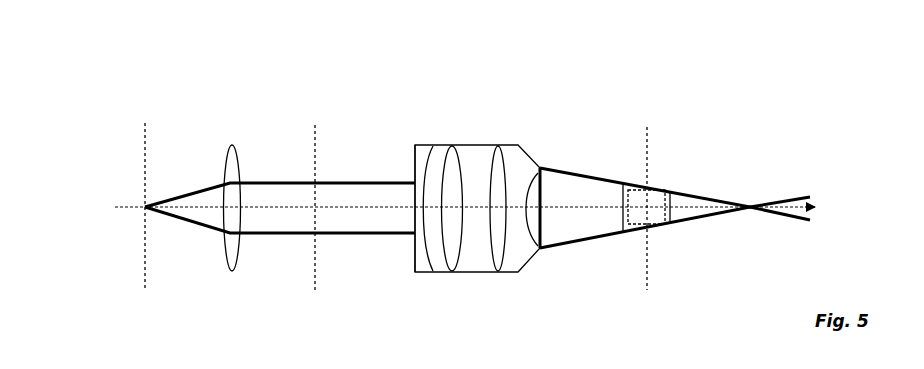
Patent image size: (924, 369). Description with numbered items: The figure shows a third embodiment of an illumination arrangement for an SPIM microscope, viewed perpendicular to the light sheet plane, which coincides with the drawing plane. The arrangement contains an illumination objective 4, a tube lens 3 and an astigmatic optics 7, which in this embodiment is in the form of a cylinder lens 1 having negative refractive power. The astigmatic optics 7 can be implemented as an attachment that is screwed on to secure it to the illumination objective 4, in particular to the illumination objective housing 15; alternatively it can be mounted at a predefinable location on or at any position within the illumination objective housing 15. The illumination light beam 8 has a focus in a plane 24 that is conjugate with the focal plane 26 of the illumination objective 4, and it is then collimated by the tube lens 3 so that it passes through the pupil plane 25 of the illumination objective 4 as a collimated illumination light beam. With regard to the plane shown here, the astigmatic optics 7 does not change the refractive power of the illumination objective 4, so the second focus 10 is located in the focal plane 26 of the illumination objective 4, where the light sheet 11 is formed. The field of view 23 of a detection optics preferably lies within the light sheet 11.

The cylinder lens 1 is at (415, 156).
The tube lens 3 is at (233, 167).
The illumination objective 4 is at (468, 112).
The astigmatic optics 7 is at (424, 276).
The illumination light beam 8 is at (192, 202).
The second focus 10 is at (765, 195).
The light sheet 11 is at (633, 187).
The illumination objective housing 15 is at (475, 275).
The field of view of the detection optics 23 is at (655, 196).
The plane conjugate with the focal plane of the illumination objective 24 is at (143, 160).
The pupil plane of the illumination objective 25 is at (316, 156).
The focal plane of the illumination objective 26 is at (648, 140).